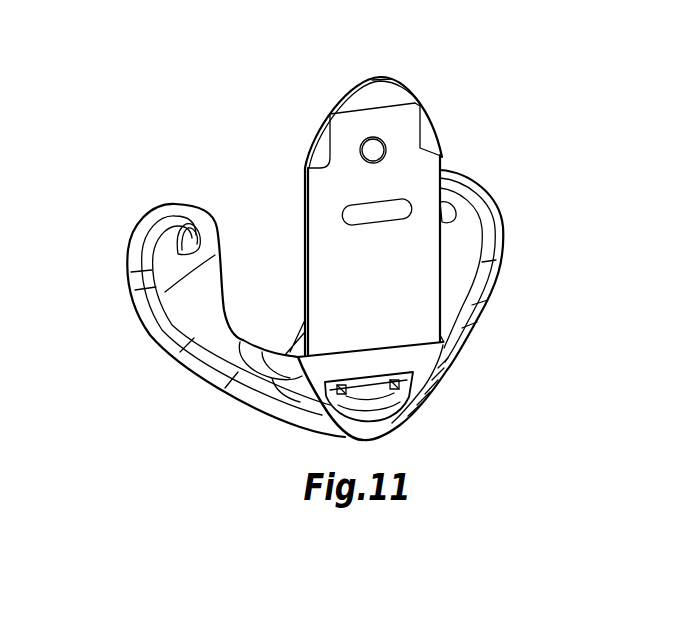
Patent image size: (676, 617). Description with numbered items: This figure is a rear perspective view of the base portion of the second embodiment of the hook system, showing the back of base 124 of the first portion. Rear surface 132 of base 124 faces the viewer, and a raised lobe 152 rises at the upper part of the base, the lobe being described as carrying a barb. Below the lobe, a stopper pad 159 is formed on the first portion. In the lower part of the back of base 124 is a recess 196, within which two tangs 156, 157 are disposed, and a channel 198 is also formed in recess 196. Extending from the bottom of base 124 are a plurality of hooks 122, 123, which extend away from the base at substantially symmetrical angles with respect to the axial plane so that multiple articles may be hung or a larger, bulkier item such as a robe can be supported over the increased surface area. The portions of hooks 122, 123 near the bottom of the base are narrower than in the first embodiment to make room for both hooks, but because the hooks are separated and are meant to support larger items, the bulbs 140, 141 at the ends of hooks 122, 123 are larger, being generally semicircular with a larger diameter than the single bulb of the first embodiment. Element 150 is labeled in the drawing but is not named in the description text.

The base 124 is at (55, 7).
The raised lobe 152 is at (378, 97).
The upper tab of mounting plate 150 is at (315, 150).
The bulb 140 is at (485, 195).
The bulb 141 is at (158, 220).
The hook 122 is at (490, 223).
The stopper pad 159 is at (355, 215).
The hook 123 is at (162, 286).
The rear surface 132 is at (408, 278).
The recess 196 is at (413, 382).
The tang 157 is at (395, 418).
The tang 156 is at (320, 432).
The channel 198 is at (390, 420).